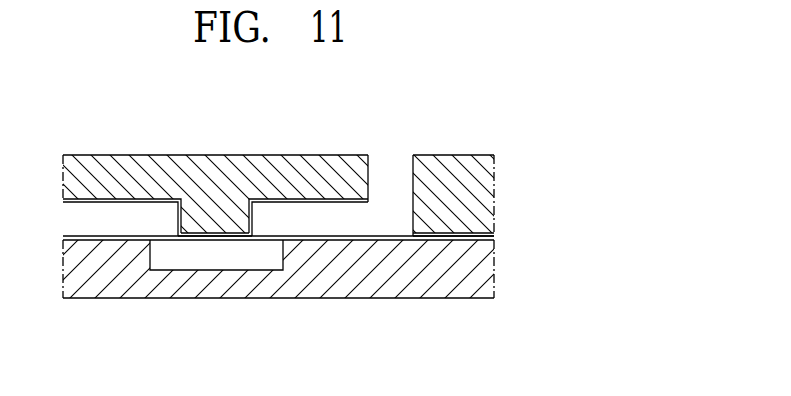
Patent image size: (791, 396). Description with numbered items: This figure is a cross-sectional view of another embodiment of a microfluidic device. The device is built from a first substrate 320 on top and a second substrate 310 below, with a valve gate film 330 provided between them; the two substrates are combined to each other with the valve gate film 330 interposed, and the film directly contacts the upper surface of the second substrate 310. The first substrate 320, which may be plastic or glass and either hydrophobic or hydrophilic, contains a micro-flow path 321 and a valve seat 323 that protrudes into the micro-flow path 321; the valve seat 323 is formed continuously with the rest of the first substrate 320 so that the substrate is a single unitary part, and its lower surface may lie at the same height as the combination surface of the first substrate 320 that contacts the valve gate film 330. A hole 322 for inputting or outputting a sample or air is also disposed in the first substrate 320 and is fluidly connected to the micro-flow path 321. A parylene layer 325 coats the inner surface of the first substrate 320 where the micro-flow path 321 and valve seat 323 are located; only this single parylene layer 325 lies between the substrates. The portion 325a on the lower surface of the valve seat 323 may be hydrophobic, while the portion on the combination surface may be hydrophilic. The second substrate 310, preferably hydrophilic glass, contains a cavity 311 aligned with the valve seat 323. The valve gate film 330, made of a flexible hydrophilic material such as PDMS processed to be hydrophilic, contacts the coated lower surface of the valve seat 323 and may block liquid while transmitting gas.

The second substrate 310 is at (485, 276).
The cavity 311 is at (217, 258).
The first substrate 320 is at (277, 167).
The micro-flow path 321 is at (115, 213).
The hole 322 is at (393, 172).
The valve seat 323 is at (184, 217).
The parylene layer 325 is at (355, 200).
The portion of the parylene layer 325a is at (226, 212).
The valve gate film 330 is at (490, 241).